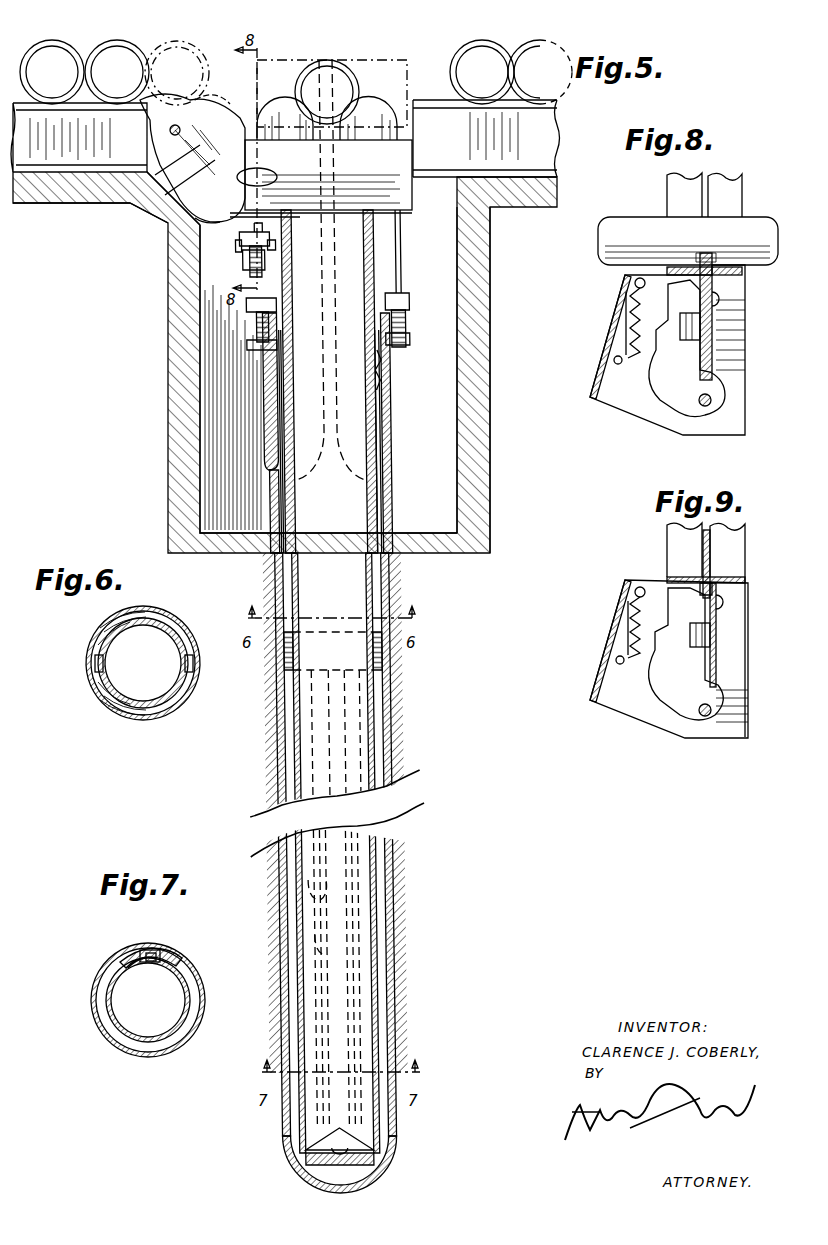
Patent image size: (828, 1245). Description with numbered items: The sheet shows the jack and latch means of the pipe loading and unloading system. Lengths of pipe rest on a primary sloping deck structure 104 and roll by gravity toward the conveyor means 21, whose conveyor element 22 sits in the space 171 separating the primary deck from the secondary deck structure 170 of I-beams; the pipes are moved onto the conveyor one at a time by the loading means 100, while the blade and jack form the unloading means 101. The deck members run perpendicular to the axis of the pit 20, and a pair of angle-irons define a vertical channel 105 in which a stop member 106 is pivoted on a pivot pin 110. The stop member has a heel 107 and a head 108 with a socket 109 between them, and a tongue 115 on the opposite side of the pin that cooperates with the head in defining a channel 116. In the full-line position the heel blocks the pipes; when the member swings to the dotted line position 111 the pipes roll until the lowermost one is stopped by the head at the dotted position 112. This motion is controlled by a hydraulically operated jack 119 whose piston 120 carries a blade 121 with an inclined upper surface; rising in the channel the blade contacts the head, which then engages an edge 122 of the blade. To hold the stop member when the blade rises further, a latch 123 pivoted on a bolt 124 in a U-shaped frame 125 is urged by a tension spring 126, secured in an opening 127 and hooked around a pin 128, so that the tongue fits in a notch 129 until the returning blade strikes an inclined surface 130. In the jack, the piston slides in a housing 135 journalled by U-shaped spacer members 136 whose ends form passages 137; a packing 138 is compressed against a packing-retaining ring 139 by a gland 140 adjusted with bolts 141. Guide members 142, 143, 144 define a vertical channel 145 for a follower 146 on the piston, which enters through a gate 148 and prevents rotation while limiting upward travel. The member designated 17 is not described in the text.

In FIG. 5, the beam flange 17 is at (545, 172).
In FIG. 5, the pit 20 is at (468, 500).
In FIG. 5, the conveyor means 21 is at (365, 78).
In FIG. 5, the conveyor element 22 is at (360, 112).
In FIG. 5, the loading means 100 is at (122, 200).
In FIG. 8, the loading means 100 is at (728, 262).
In FIG. 9, the loading means 100 is at (716, 577).
In FIG. 5, the unloading means 101 is at (352, 262).
In FIG. 5, the primary sloping deck structure 104 is at (62, 203).
In FIG. 8, the vertical channel 105 is at (712, 200).
In FIG. 9, the vertical channel 105 is at (715, 530).
In FIG. 5, the stop member 106 is at (195, 212).
In FIG. 5, the heel 107 is at (152, 98).
In FIG. 5, the head 108 is at (278, 118).
In FIG. 5, the socket 109 is at (226, 86).
In FIG. 5, the pivot pin 110 is at (170, 132).
In FIG. 8, the pivot pin 110 is at (722, 300).
In FIG. 9, the pivot pin 110 is at (724, 603).
In FIG. 5, the dotted line position 111 is at (192, 164).
In FIG. 5, the dotted line position of pipe 112 is at (208, 40).
In FIG. 5, the tongue 115 is at (230, 210).
In FIG. 9, the tongue 115 is at (717, 636).
In FIG. 5, the channel 116 is at (222, 218).
In FIG. 5, the hydraulically operated jack 119 is at (376, 504).
In FIG. 5, the piston 120 is at (388, 437).
In FIG. 6, the piston 120 is at (178, 638).
In FIG. 7, the piston 120 is at (184, 1025).
In FIG. 5, the blade 121 is at (404, 168).
In FIG. 8, the blade 121 is at (713, 338).
In FIG. 9, the blade 121 is at (711, 548).
In FIG. 5, the edge 122 is at (272, 174).
In FIG. 5, the latch 123 is at (252, 258).
In FIG. 8, the latch 123 is at (672, 410).
In FIG. 9, the latch 123 is at (678, 718).
In FIG. 5, the bolt 124 is at (272, 243).
In FIG. 8, the bolt 124 is at (705, 408).
In FIG. 9, the bolt 124 is at (705, 717).
In FIG. 5, the U-shaped frame 125 is at (262, 236).
In FIG. 8, the U-shaped frame 125 is at (608, 396).
In FIG. 9, the U-shaped frame 125 is at (610, 703).
In FIG. 8, the tension spring 126 is at (622, 322).
In FIG. 9, the tension spring 126 is at (622, 630).
In FIG. 8, the opening 127 is at (614, 362).
In FIG. 9, the opening 127 is at (616, 660).
In FIG. 8, the pin 128 is at (635, 284).
In FIG. 9, the pin 128 is at (635, 593).
In FIG. 8, the notch 129 is at (690, 341).
In FIG. 9, the notch 129 is at (696, 648).
In FIG. 8, the inclined surface 130 is at (697, 267).
In FIG. 9, the inclined surface 130 is at (701, 582).
In FIG. 5, the housing 135 is at (392, 714).
In FIG. 6, the housing 135 is at (122, 623).
In FIG. 7, the housing 135 is at (112, 1052).
In FIG. 5, the U-shaped spacer members 136 is at (392, 660).
In FIG. 6, the U-shaped spacer members 136 is at (186, 689).
In FIG. 6, the passages 137 is at (92, 673).
In FIG. 5, the packing 138 is at (380, 368).
In FIG. 5, the packing-retaining ring 139 is at (382, 405).
In FIG. 5, the gland 140 is at (410, 305).
In FIG. 5, the bolts 141 is at (399, 291).
In FIG. 5, the guide member 142 is at (372, 904).
In FIG. 7, the guide member 142 is at (168, 955).
In FIG. 5, the guide member 143 is at (302, 882).
In FIG. 5, the guide member 144 is at (302, 980).
In FIG. 7, the guide member 144 is at (135, 952).
In FIG. 5, the vertical channel 145 is at (366, 980).
In FIG. 7, the vertical channel 145 is at (156, 950).
In FIG. 5, the follower 146 is at (372, 1126).
In FIG. 7, the follower 146 is at (152, 950).
In FIG. 5, the gate 148 is at (305, 926).
In FIG. 5, the secondary deck structure 170 is at (540, 137).
In FIG. 5, the space 171 is at (408, 84).